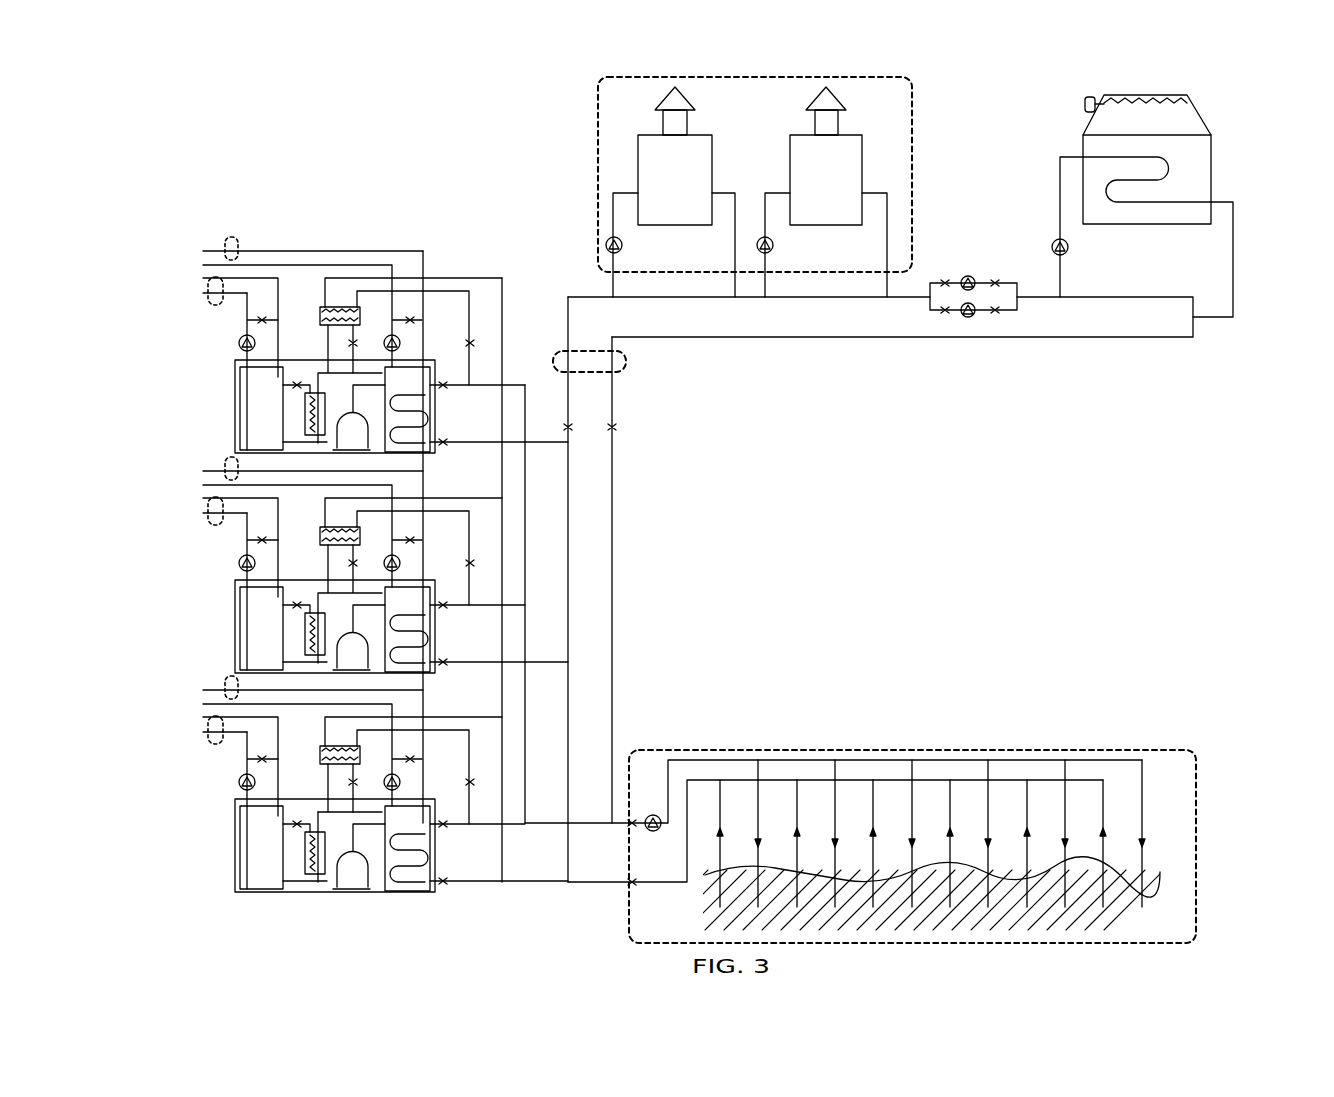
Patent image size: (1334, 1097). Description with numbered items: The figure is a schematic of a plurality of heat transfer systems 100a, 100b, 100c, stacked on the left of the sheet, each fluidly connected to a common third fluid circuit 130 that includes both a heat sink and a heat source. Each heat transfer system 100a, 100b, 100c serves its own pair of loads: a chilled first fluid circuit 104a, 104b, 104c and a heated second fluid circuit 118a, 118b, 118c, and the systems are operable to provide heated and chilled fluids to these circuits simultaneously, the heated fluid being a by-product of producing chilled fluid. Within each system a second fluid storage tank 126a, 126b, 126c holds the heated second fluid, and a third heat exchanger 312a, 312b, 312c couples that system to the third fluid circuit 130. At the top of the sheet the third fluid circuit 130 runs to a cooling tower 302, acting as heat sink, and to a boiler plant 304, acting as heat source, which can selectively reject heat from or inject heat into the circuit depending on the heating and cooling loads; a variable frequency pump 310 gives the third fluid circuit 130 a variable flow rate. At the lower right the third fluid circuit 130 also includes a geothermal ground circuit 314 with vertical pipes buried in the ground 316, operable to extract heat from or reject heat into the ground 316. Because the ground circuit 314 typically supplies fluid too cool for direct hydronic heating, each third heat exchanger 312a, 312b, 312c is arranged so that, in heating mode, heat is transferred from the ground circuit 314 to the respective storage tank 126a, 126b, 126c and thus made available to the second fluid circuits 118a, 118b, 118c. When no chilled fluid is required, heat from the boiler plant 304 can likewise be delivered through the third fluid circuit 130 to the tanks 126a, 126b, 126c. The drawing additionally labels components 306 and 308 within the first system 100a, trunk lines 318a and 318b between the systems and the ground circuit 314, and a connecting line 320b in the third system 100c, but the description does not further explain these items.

The heat transfer system 100a is at (212, 397).
The heat transfer system 100b is at (273, 617).
The heat transfer system 100c is at (273, 845).
The first fluid circuit 104a is at (210, 293).
The first fluid circuit 104b is at (252, 541).
The first fluid circuit 104c is at (252, 760).
The second fluid circuit 118a is at (220, 240).
The second fluid circuit 118b is at (267, 470).
The second fluid circuit 118c is at (267, 686).
The second fluid storage tank 126a is at (425, 423).
The second fluid storage tank 126b is at (476, 774).
The second fluid storage tank 126c is at (476, 884).
The third fluid circuit 130 is at (590, 352).
The cooling tower 302 is at (1202, 122).
The boiler plant 304 is at (910, 123).
The storage tank 306 is at (400, 372).
The heat exchanger coil 308 is at (252, 380).
The variable frequency pump 310 is at (978, 270).
The third heat exchanger 312a is at (345, 307).
The third heat exchanger 312b is at (236, 482).
The third heat exchanger 312c is at (236, 705).
The geothermal ground circuit 314 is at (1097, 748).
The ground 316 is at (1097, 882).
The supply trunk line 318a is at (569, 693).
The return trunk line 318b is at (613, 720).
The connecting pipe 320b is at (247, 803).